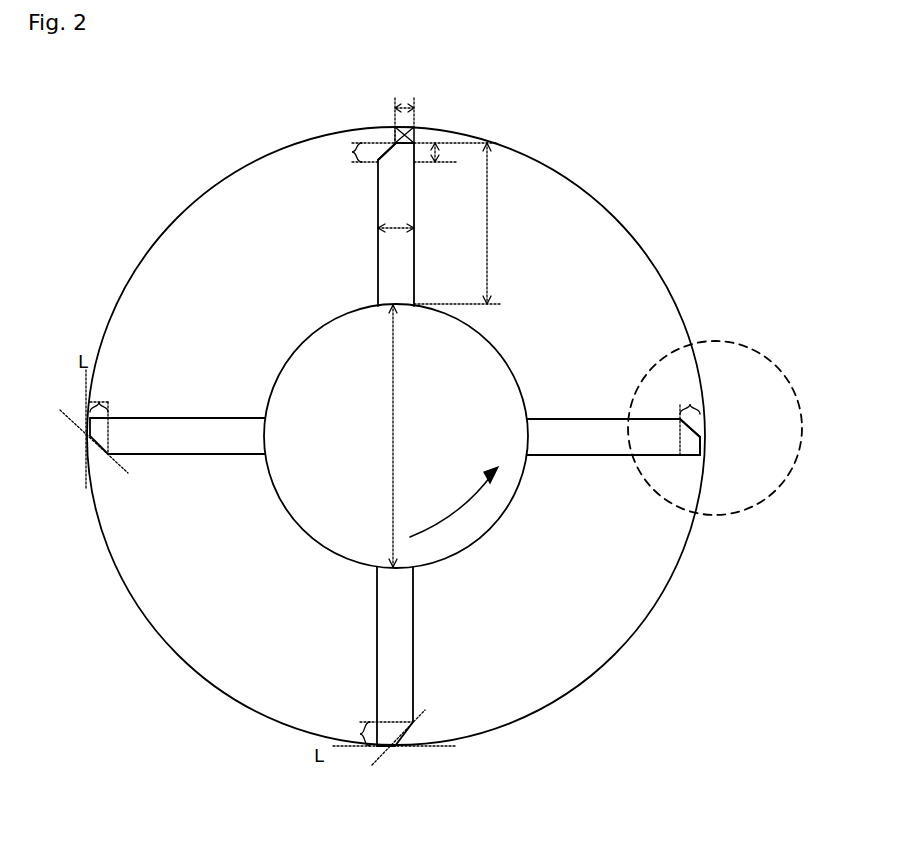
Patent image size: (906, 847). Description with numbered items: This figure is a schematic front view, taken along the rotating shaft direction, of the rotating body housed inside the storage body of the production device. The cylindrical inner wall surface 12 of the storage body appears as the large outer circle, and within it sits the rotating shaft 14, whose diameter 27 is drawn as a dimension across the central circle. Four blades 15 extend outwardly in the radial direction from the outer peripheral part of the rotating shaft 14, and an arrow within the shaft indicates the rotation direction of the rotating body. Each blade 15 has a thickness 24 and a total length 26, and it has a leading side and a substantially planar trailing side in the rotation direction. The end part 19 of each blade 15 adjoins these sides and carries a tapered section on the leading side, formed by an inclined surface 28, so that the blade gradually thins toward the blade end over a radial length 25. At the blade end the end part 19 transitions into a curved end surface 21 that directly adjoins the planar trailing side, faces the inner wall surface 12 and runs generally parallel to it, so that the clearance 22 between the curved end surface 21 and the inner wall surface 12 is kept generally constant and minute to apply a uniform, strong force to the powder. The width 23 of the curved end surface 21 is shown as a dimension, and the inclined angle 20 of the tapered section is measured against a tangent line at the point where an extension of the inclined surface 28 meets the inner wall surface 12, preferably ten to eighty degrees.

The inner wall surface 12 is at (163, 232).
The rotating shaft 14 is at (268, 380).
The blade 15 is at (378, 278).
The end part 19 is at (355, 733).
The inclined angle 20 is at (100, 455).
The curved end surface 21 is at (700, 445).
The clearance 22 is at (420, 126).
The width 23 is at (404, 107).
The thickness 24 is at (378, 235).
The length 25 is at (440, 162).
The total length 26 is at (487, 243).
The diameter 27 is at (393, 410).
The inclined surface 28 is at (380, 158).